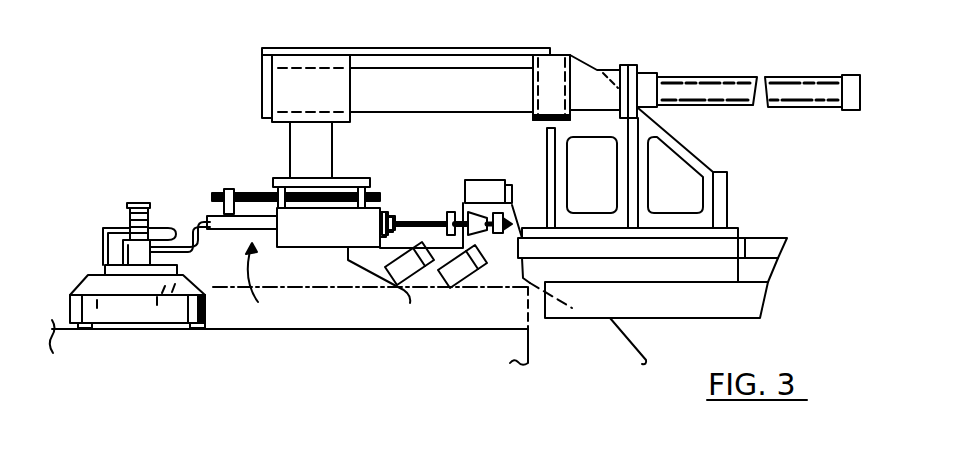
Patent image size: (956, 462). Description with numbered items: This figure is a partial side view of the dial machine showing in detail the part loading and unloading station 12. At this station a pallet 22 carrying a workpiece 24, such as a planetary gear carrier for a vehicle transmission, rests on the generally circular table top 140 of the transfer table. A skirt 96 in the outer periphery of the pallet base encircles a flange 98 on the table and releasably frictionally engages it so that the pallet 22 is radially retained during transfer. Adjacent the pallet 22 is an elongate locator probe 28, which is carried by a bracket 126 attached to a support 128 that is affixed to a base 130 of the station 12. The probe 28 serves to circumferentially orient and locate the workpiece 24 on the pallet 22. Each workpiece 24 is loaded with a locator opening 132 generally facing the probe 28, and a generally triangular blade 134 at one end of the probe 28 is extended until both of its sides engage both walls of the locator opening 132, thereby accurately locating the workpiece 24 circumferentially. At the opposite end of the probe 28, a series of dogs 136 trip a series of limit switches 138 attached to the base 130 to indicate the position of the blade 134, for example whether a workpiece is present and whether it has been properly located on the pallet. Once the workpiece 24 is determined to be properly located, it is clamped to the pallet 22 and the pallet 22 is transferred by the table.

The part loading and unloading station 12 is at (140, 87).
The pallet 22 is at (78, 287).
The workpiece 24 is at (107, 228).
The locator probe 28 is at (370, 283).
The skirt 96 is at (205, 316).
The flange 98 is at (196, 328).
The bracket 126 is at (325, 158).
The support 128 is at (427, 58).
The base 130 is at (750, 305).
The locator opening 132 is at (180, 230).
The blade 134 is at (198, 230).
The dogs 136 is at (447, 210).
The limit switches 138 is at (489, 185).
The table top 140 is at (346, 320).